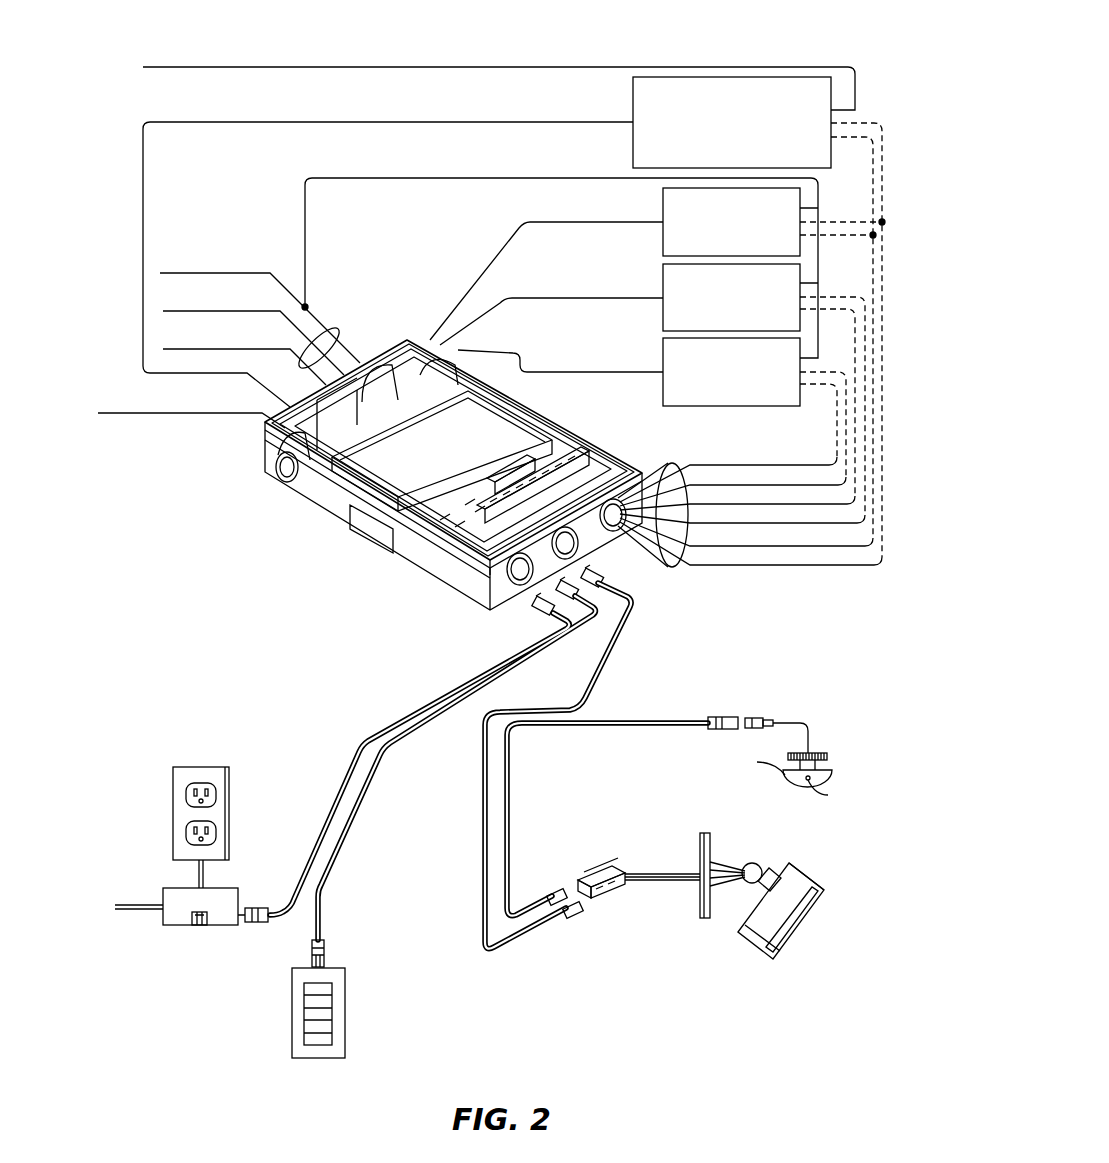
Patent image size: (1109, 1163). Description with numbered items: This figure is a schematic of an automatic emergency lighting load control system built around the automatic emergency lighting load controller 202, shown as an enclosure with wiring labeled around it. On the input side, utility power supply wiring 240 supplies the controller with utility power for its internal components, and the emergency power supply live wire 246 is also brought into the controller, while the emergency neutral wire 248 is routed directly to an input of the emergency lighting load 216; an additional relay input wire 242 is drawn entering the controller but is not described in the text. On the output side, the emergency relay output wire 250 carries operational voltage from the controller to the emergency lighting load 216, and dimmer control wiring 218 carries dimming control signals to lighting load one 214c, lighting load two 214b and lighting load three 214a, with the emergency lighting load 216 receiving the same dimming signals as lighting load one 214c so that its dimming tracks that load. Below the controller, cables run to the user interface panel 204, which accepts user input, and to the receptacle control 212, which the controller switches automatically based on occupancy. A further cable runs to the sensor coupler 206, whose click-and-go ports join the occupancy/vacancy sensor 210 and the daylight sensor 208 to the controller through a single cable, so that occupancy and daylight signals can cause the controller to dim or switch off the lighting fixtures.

The automatic emergency lighting load controller 202 is at (407, 338).
The user interface panel 204 is at (335, 963).
The sensor coupler 206 is at (610, 900).
The daylight sensor 208 is at (817, 752).
The occupancy/vacancy sensor 210 is at (807, 870).
The receptacle control 212 is at (227, 887).
The lighting load 3 214a is at (663, 392).
The lighting load 2 214b is at (663, 318).
The lighting load 1 214c is at (663, 243).
The emergency lighting load 216 is at (633, 142).
The dimmer control wiring 218 is at (665, 570).
The utility power supply wiring 240 is at (334, 332).
The blue relay in wire 242 is at (220, 349).
The emergency power supply live wire 246 is at (155, 413).
The emergency neutral wire 248 is at (212, 67).
The emergency relay output wire 250 is at (212, 122).